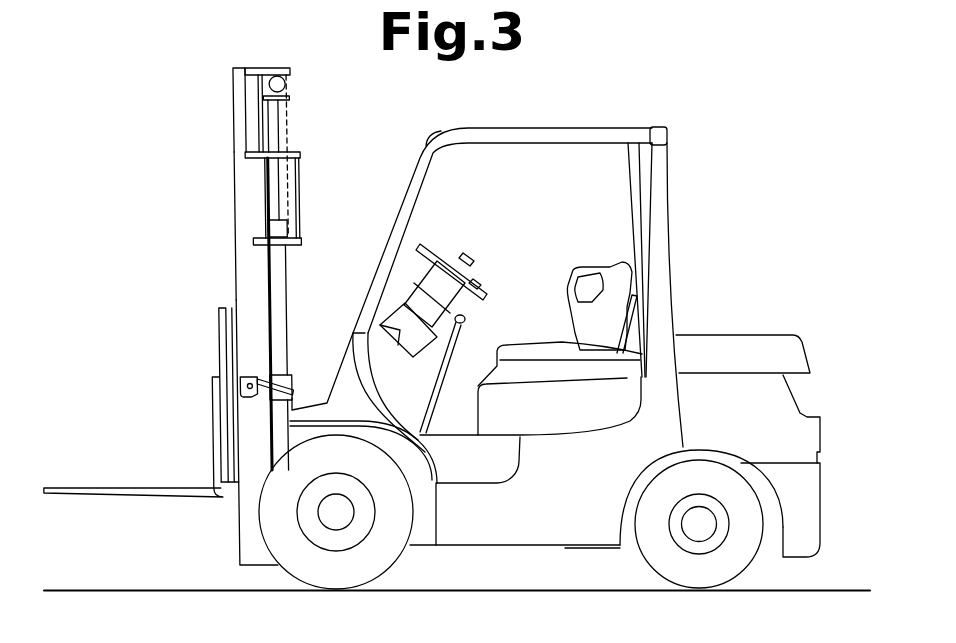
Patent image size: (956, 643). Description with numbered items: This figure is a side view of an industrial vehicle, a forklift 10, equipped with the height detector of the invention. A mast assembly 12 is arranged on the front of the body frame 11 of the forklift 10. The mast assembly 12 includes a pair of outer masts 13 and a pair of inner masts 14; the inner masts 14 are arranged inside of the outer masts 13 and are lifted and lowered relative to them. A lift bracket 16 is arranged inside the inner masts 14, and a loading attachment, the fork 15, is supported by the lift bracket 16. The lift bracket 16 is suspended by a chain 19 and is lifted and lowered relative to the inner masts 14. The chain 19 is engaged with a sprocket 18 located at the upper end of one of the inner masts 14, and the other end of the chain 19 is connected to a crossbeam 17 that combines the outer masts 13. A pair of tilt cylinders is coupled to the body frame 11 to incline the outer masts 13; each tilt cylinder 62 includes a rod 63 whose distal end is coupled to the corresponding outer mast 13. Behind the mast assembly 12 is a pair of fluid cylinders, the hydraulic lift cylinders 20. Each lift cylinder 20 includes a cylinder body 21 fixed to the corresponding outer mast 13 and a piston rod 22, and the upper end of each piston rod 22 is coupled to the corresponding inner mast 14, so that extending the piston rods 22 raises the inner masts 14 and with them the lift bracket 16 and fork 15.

The forklift 10 is at (771, 128).
The body frame 11 is at (497, 546).
The mast assembly 12 is at (232, 168).
The outer mast 13 is at (238, 232).
The inner mast 14 is at (238, 91).
The fork 15 is at (103, 490).
The lift bracket 16 is at (221, 316).
The crossbeam 17 is at (301, 240).
The sprocket 18 is at (288, 90).
The chain 19 is at (289, 119).
The hydraulic lift cylinder 20 is at (288, 305).
The cylinder body 21 is at (281, 355).
The piston rod 22 is at (278, 188).
The tilt cylinder 62 is at (293, 400).
The rod 63 is at (262, 400).